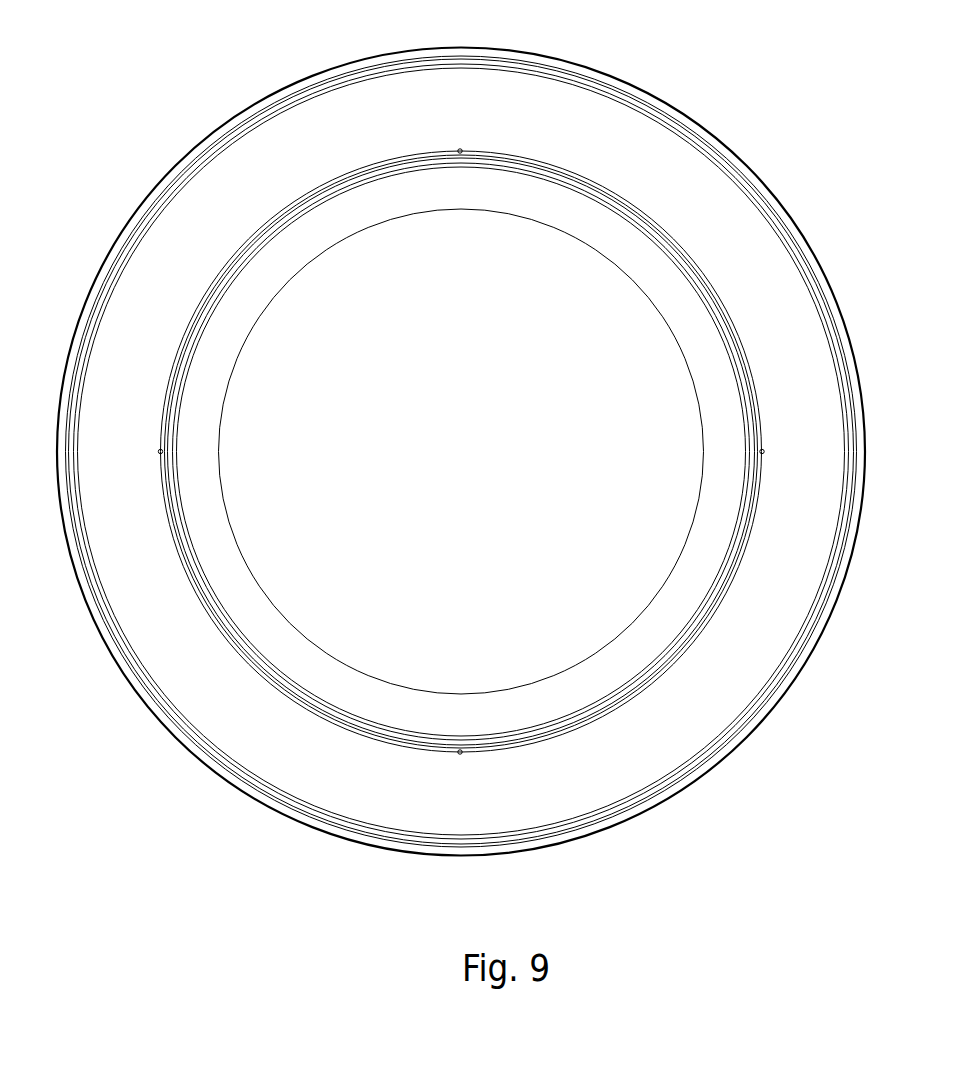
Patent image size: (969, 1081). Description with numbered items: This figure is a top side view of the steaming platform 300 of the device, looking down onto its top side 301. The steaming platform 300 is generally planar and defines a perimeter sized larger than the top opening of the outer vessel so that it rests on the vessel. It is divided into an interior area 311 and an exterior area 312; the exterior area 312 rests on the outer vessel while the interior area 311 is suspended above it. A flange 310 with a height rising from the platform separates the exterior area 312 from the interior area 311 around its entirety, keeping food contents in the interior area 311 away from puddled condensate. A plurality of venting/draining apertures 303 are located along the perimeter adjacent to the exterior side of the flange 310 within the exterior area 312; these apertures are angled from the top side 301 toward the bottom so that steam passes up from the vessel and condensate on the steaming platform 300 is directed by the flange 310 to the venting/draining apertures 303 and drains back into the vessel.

The steaming platform 300 is at (157, 183).
The top side 301 is at (658, 140).
The venting/draining apertures 303 is at (458, 149).
The flange 310 is at (553, 173).
The interior area 311 is at (350, 213).
The exterior area 312 is at (347, 107).